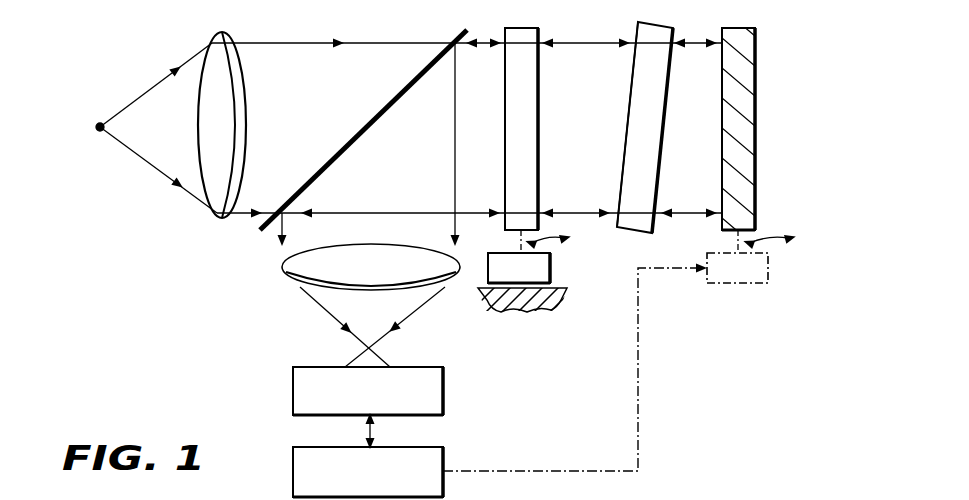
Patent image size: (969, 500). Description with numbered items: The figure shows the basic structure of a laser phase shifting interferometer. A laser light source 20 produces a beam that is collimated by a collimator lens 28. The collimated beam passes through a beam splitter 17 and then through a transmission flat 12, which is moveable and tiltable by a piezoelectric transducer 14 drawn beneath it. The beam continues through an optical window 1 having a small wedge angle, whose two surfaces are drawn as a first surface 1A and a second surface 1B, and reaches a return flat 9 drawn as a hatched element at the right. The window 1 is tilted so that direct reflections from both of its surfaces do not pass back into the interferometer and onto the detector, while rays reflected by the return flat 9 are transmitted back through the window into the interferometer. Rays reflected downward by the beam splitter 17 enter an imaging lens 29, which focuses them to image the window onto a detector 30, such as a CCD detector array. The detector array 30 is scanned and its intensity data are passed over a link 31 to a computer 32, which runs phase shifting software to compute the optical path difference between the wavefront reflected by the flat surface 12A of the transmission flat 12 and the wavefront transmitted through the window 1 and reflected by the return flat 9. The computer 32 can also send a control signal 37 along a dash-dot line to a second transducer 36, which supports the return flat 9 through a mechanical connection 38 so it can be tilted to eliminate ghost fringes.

The optical window 1 is at (652, 118).
The first surface of plate 1 1A is at (630, 113).
The second surface of plate 1 1B is at (665, 103).
The return flat 9 is at (733, 26).
The transmission flat 12 is at (541, 117).
The flat surface 12A is at (540, 115).
The piezoelectric transducer 14 is at (553, 271).
The beam splitter 17 is at (386, 109).
The laser light source 20 is at (106, 123).
The collimator lens 28 is at (219, 218).
The imaging lens 29 is at (286, 273).
The detector 30 is at (445, 383).
The connection between detector array and computer 31 is at (368, 428).
The computer 32 is at (445, 459).
The piezoelectric transducer for mirror 36 is at (770, 262).
The control signal 37 is at (640, 371).
The mechanical connection 38 is at (734, 235).